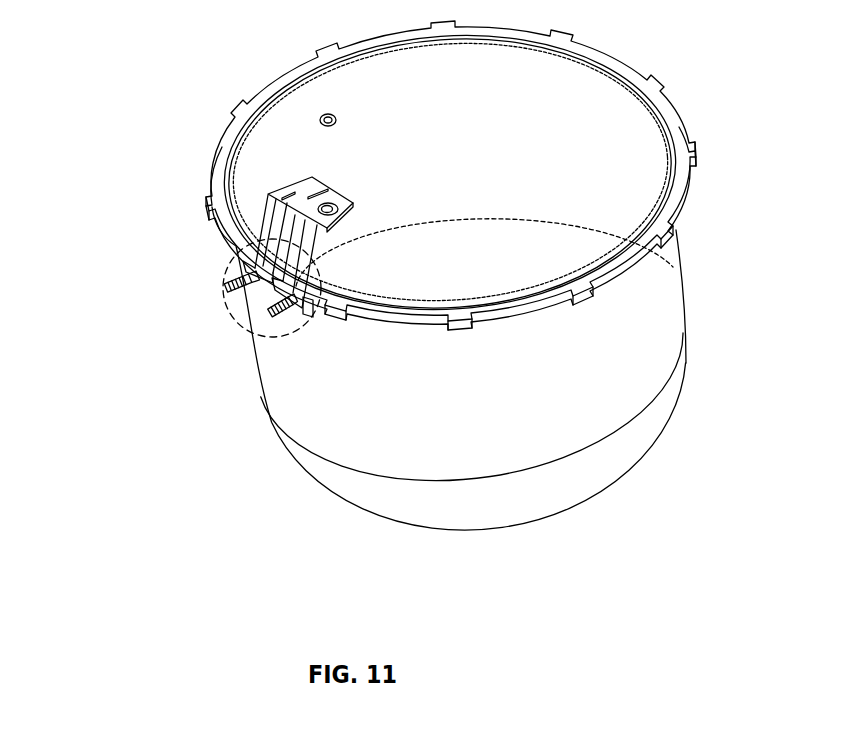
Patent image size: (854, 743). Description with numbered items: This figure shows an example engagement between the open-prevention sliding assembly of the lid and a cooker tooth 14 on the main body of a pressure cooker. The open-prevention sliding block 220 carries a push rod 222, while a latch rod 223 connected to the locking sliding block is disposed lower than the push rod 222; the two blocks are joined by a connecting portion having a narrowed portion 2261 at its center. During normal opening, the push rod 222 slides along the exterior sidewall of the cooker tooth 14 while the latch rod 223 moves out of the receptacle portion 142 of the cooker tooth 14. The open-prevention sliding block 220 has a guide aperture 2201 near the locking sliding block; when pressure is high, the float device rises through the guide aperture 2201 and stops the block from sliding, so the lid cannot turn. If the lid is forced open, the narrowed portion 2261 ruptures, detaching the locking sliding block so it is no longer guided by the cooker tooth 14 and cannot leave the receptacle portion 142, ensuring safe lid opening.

The cooker tooth 14 is at (330, 310).
The receptacle portion 142 is at (313, 300).
The open-prevention sliding block 220 is at (265, 223).
The guide aperture 2201 is at (340, 207).
The push rod 222 is at (224, 290).
The latch rod 223 is at (272, 314).
The narrowed portion 2261 is at (307, 200).